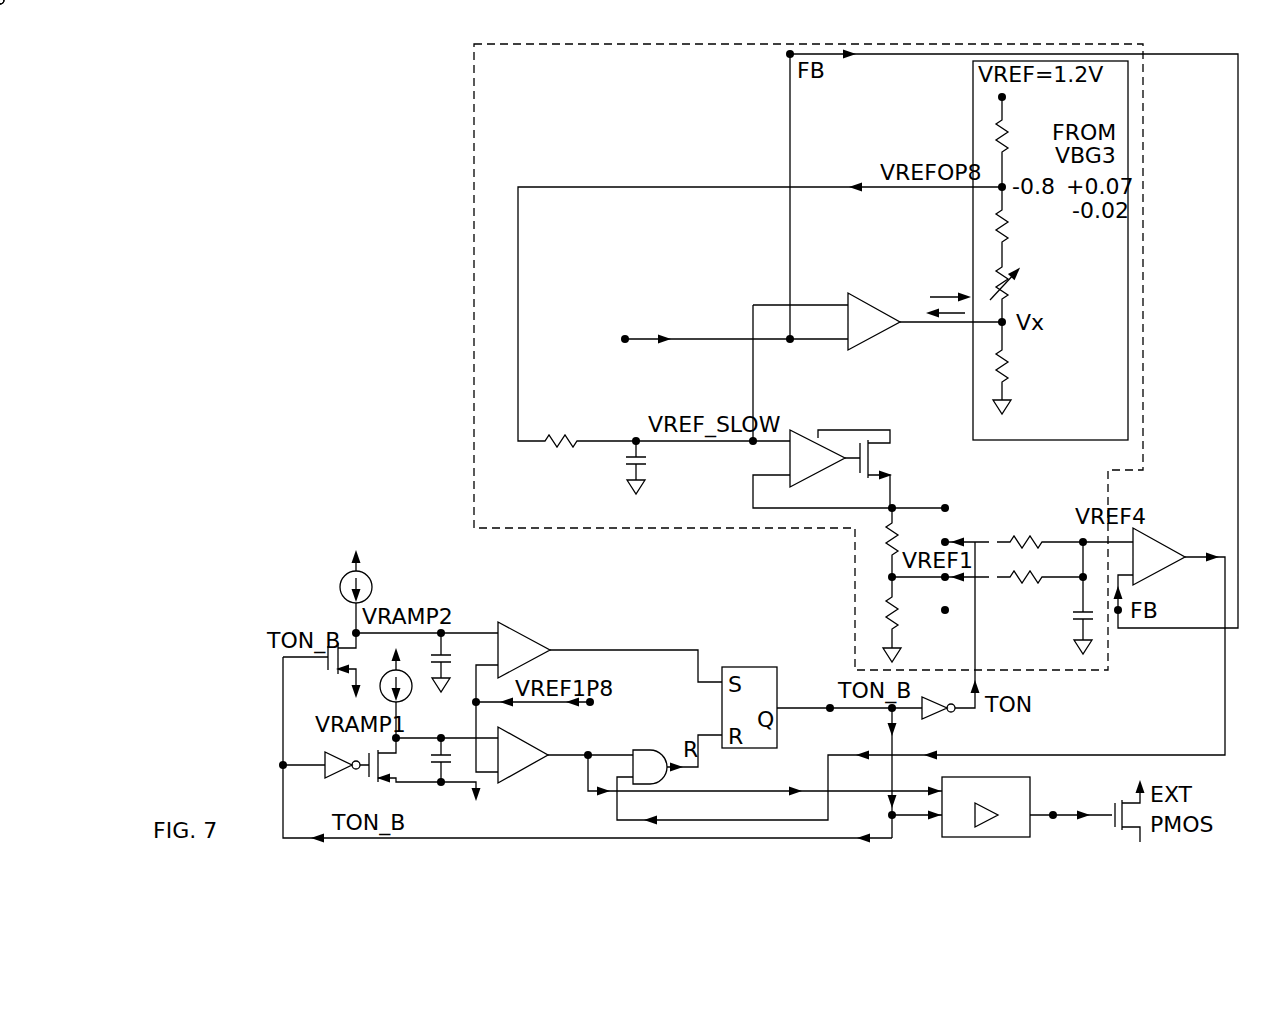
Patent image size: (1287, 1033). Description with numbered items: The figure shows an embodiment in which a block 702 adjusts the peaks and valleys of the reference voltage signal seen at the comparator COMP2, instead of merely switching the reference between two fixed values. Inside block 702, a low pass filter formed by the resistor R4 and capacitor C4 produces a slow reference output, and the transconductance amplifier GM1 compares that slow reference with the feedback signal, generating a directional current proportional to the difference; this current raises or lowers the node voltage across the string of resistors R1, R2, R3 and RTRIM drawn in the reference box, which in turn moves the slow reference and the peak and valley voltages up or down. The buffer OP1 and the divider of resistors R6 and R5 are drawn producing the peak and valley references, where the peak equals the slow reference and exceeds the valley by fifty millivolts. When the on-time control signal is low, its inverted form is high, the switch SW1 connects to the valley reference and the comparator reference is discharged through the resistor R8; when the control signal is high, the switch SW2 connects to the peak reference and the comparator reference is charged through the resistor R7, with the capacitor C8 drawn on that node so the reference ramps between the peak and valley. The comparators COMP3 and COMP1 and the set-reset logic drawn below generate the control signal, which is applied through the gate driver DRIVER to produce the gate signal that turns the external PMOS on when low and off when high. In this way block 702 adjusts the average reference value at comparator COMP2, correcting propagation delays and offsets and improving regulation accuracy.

The block 702 is at (808, 357).
The resistor R1 is at (1020, 366).
The resistor R2 is at (1020, 226).
The resistor R3 is at (1020, 136).
The trim resistor RTRIM is at (1038, 283).
The resistor R4 is at (561, 442).
The capacitor C4 is at (667, 471).
The transconductance amplifier GM1 is at (799, 354).
The operational amplifier OP1 is at (862, 454).
The resistor R5 is at (908, 619).
The resistor R6 is at (910, 542).
The resistor R7 is at (1069, 514).
The resistor R8 is at (1044, 576).
The 4 pF capacitor C8 is at (1064, 601).
The switch SW1 is at (950, 626).
The switch SW2 is at (948, 509).
The comparator 1 COMP1 is at (713, 747).
The comparator COMP2 is at (928, 662).
The comparator 3 COMP3 is at (603, 637).
The gate driver DRIVER is at (1027, 807).